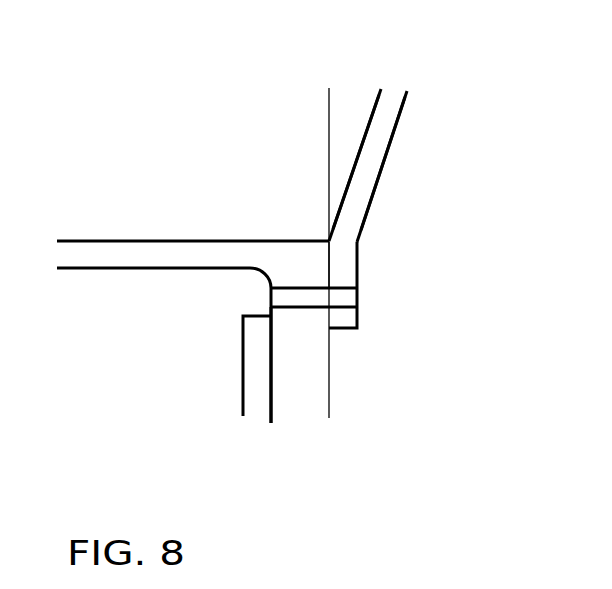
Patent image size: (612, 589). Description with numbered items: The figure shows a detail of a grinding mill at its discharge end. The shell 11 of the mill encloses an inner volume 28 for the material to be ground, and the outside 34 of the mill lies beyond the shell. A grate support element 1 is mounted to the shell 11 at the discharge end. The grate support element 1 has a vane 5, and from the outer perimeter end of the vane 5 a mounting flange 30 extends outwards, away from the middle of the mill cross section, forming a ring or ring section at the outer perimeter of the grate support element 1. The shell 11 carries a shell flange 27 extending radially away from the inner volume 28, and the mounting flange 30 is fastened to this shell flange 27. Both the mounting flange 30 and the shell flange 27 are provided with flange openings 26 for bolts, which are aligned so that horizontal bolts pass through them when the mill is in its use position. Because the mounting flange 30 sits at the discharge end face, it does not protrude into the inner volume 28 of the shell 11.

The grate support element 1 is at (393, 85).
The vane 5 is at (372, 163).
The shell 11 is at (123, 258).
The flange openings 26 is at (342, 295).
The shell flange 27 is at (288, 350).
The inner volume 28 is at (150, 145).
The mounting flange 30 is at (343, 260).
The outside 34 is at (507, 180).